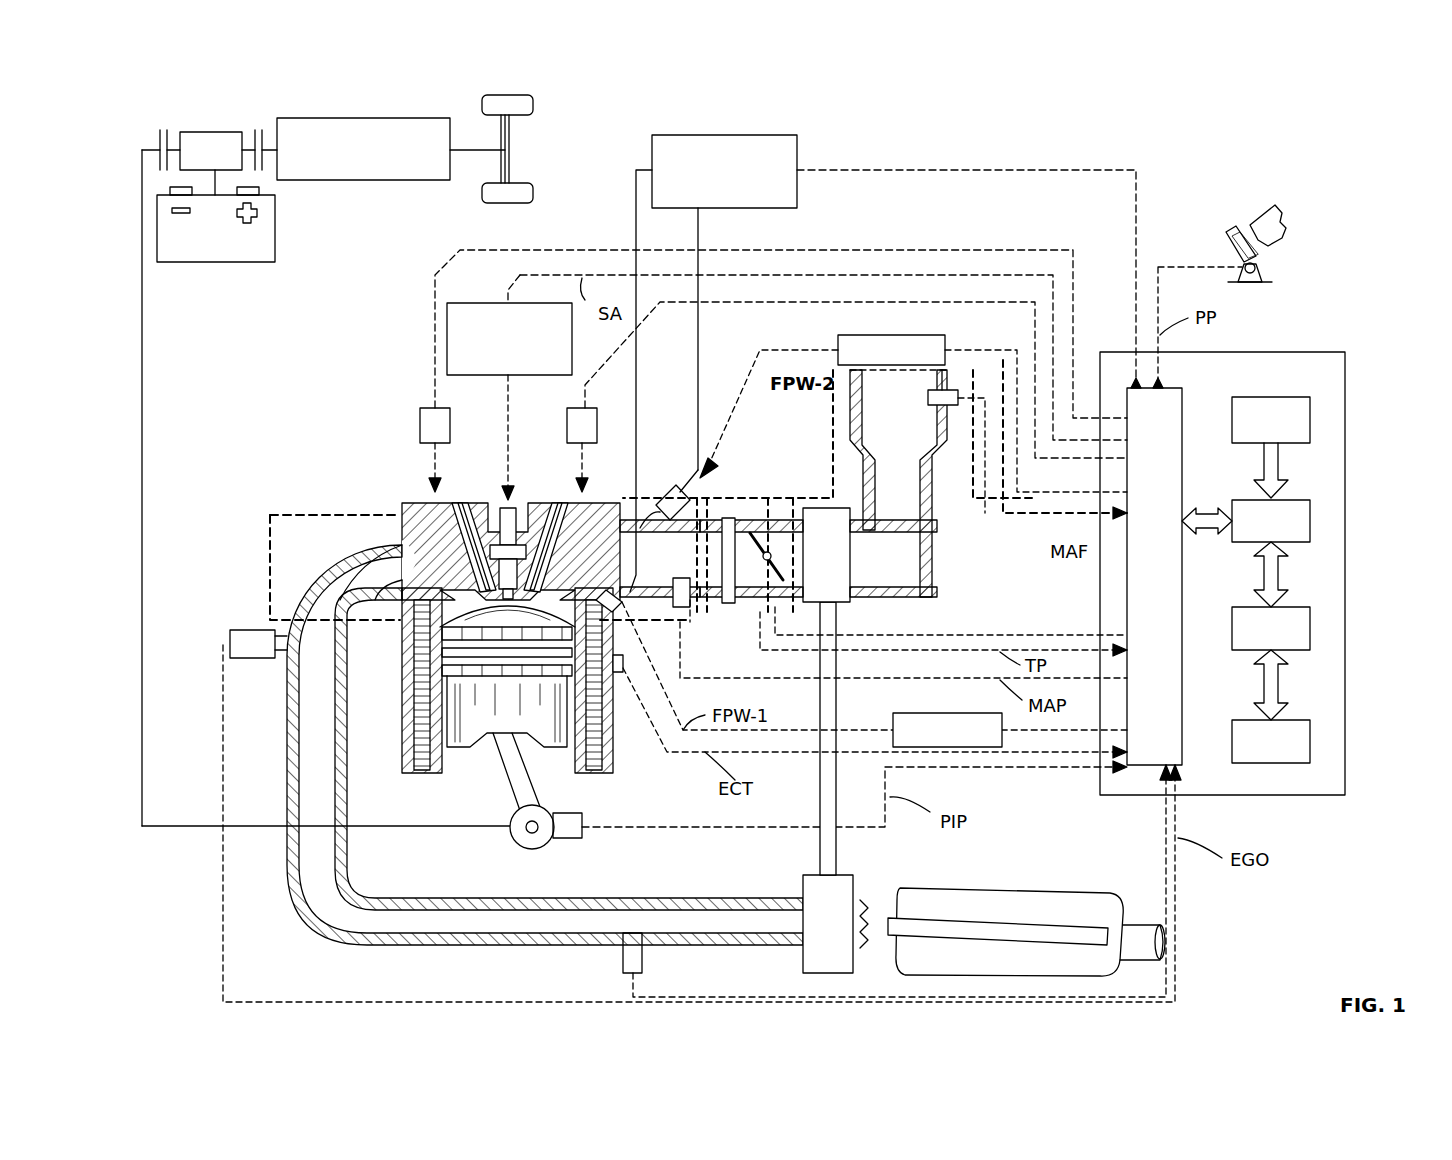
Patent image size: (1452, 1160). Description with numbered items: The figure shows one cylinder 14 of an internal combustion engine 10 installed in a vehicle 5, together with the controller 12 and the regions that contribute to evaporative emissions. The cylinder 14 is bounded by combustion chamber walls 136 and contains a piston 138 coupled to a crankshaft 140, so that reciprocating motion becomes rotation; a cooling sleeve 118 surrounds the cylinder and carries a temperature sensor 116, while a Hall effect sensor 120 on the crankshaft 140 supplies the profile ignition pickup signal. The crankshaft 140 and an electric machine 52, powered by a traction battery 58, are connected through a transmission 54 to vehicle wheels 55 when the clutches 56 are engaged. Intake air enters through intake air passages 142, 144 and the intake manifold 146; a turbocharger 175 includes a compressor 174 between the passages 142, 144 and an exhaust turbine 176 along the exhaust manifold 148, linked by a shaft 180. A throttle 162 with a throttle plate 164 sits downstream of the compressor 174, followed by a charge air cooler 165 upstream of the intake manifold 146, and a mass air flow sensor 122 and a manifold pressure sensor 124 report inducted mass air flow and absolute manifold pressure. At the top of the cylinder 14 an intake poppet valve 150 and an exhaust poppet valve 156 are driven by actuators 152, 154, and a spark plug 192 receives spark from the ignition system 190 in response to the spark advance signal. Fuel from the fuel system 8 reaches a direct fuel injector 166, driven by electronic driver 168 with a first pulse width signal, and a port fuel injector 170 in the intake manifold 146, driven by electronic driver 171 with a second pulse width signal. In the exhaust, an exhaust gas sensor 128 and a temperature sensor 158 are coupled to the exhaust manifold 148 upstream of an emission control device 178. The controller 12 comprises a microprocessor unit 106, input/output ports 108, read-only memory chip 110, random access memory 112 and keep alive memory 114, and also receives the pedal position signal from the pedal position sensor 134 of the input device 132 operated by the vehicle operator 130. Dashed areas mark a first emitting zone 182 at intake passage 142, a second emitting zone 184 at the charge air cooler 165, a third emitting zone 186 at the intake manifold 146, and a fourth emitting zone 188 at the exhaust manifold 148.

The vehicle 5 is at (1398, 166).
The fuel system 8 is at (760, 135).
The internal combustion engine 10 is at (332, 455).
The controller 12 is at (1345, 352).
The cylinder 14 is at (420, 605).
The electric machine 52 is at (218, 132).
The transmission 54 is at (425, 180).
The vehicle wheels 55 is at (510, 205).
The clutch 56 is at (160, 138).
The traction battery 58 is at (210, 262).
The microprocessor unit 106 is at (1310, 512).
The input/output ports 108 is at (1185, 390).
The read-only memory chip 110 is at (1310, 418).
The random access memory 112 is at (1310, 625).
The keep alive memory 114 is at (1310, 740).
The temperature sensor 116 is at (618, 690).
The cooling sleeve 118 is at (600, 773).
The Hall effect sensor 120 is at (570, 838).
The mass air flow sensor 122 is at (952, 388).
The MAP sensor 124 is at (683, 640).
The exhaust gas sensor 128 is at (230, 635).
The vehicle operator 130 is at (1271, 239).
The input device 132 is at (1228, 248).
The pedal position sensor 134 is at (1258, 268).
The combustion chamber walls 136 is at (445, 773).
The piston 138 is at (488, 735).
The crankshaft 140 is at (522, 847).
The intake air passage 142 is at (898, 483).
The intake air passage 144 is at (792, 596).
The intake manifold 146 is at (660, 558).
The exhaust manifold 148 is at (371, 572).
The intake poppet valve 150 is at (520, 548).
The actuator 152 is at (568, 418).
The actuator 154 is at (418, 415).
The exhaust poppet valve 156 is at (400, 540).
The temperature sensor 158 is at (623, 968).
The throttle 162 is at (780, 540).
The throttle plate 164 is at (762, 530).
The charge air cooler 165 is at (730, 518).
The fuel injector 166 is at (595, 595).
The electronic driver 168 is at (893, 718).
The fuel injector 170 is at (668, 498).
The electronic driver 171 is at (840, 340).
The compressor 174 is at (826, 555).
The turbocharger 175 is at (898, 658).
The exhaust turbine 176 is at (828, 924).
The emission control device 178 is at (1092, 905).
The shaft 180 is at (840, 845).
The first emitting zone 182 is at (955, 505).
The second emitting zone 184 is at (692, 612).
The third emitting zone 186 is at (648, 505).
The fourth emitting zone 188 is at (270, 520).
The ignition system 190 is at (493, 303).
The spark plug 192 is at (490, 520).